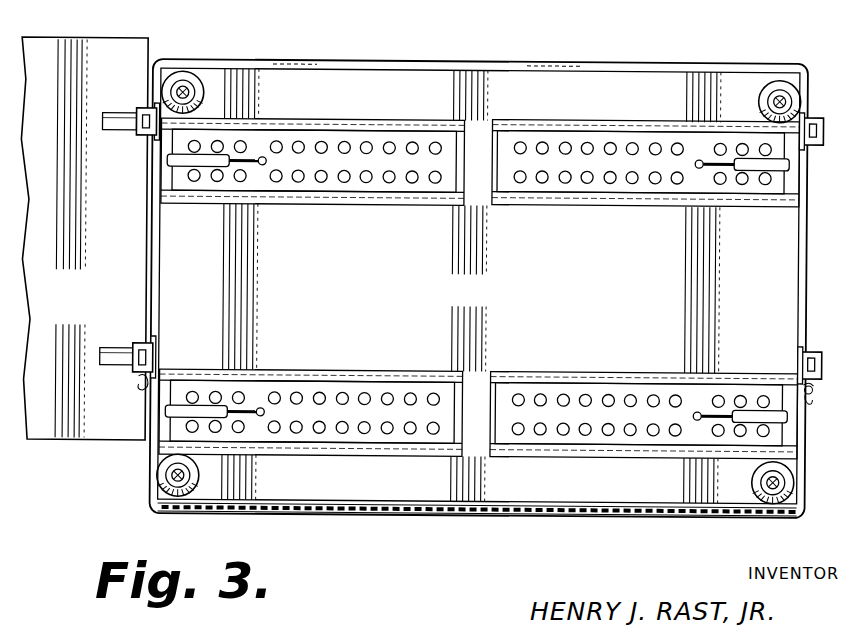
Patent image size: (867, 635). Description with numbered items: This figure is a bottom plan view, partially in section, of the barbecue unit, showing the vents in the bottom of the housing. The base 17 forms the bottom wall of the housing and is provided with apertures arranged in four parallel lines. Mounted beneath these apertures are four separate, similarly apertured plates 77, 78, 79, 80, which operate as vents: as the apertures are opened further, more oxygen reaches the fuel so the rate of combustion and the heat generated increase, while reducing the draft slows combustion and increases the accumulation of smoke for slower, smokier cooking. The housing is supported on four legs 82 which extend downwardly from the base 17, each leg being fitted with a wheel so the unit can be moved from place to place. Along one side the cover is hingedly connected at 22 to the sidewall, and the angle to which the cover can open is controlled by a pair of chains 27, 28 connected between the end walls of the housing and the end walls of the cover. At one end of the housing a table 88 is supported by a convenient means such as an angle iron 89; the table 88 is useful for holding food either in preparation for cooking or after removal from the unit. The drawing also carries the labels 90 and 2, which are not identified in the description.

The table 88 is at (53, 53).
The base 17 is at (488, 302).
The hinge 22 is at (455, 512).
The legs 82 is at (183, 90).
The apertured plate 79 is at (356, 190).
The apertured plate 78 is at (665, 181).
The apertured plate 80 is at (379, 432).
The apertured plate 77 is at (622, 433).
The angle iron 89 is at (118, 118).
The clip 90 is at (143, 138).
The chain 28 is at (140, 388).
The latch 2 is at (818, 385).
The chain 27 is at (814, 395).